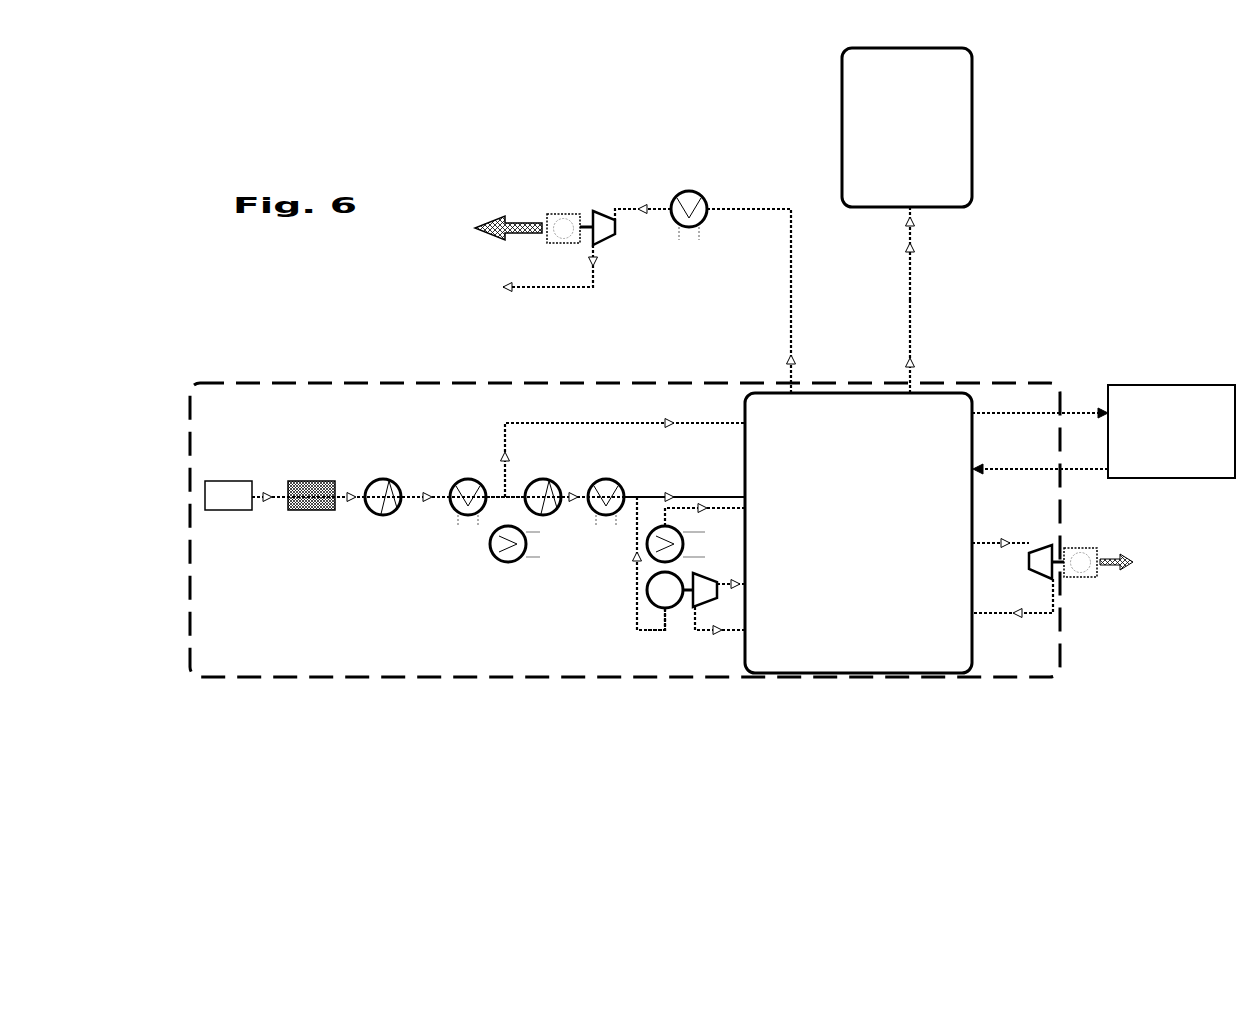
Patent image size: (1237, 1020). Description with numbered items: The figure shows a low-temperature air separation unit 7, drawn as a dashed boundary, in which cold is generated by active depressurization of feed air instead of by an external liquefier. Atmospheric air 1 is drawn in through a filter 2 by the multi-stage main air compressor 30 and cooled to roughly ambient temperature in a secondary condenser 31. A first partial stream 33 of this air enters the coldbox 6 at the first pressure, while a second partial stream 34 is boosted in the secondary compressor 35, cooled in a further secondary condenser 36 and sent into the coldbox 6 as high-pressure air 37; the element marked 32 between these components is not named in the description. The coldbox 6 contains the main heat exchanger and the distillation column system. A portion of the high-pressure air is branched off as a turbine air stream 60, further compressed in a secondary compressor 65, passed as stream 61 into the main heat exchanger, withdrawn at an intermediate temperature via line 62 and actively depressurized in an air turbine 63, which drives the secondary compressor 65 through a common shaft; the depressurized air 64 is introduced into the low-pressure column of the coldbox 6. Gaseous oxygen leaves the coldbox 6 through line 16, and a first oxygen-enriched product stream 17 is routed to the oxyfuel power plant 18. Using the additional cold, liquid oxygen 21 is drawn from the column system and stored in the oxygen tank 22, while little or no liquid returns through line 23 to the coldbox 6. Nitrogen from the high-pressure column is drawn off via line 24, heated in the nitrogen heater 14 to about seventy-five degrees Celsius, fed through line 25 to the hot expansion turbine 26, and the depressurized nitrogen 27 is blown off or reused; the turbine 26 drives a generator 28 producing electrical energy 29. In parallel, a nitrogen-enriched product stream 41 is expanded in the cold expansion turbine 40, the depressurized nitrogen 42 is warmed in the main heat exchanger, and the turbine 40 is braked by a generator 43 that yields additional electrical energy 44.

The atmospheric air 1 is at (233, 512).
The filter 2 is at (315, 510).
The coldbox 6 is at (858, 533).
The low-temperature air separation unit 7 is at (380, 676).
The nitrogen heater 14 is at (689, 191).
The oxygen product line 16 is at (909, 334).
The first oxygen-enriched product stream 17 is at (909, 274).
The oxyfuel power plant 18 is at (907, 127).
The liquid oxygen line 21 is at (1014, 392).
The liquid oxygen tank 22 is at (1171, 431).
The tank return line 23 is at (1082, 469).
The nitrogen withdrawal line 24 is at (790, 258).
The turbine feed line 25 is at (633, 207).
The hot expansion turbine 26 is at (619, 232).
The actively depressurized nitrogen 27 is at (594, 288).
The generator 28 is at (566, 213).
The electrical energy 29 is at (526, 223).
The main air compressor 30 is at (384, 515).
The secondary condenser 31 is at (470, 513).
The connecting line 32 is at (501, 507).
The first partial stream 33 is at (569, 425).
The second partial stream 34 is at (520, 556).
The secondary compressor 35 is at (552, 520).
The secondary condenser 36 is at (607, 520).
The high-pressure air 37 is at (683, 491).
The cold expansion turbine 40 is at (1047, 548).
The nitrogen-enriched product stream 41 is at (1004, 543).
The actively depressurized nitrogen 42 is at (1020, 615).
The generator 43 is at (1082, 548).
The additional electrical energy 44 is at (1122, 561).
The turbine air stream 60 is at (635, 594).
The turbine air stream 61 is at (711, 509).
The turbine air removal line 62 is at (714, 581).
The air turbine 63 is at (710, 578).
The actively depressurized air 64 is at (710, 632).
The secondary compressor 65 is at (660, 608).